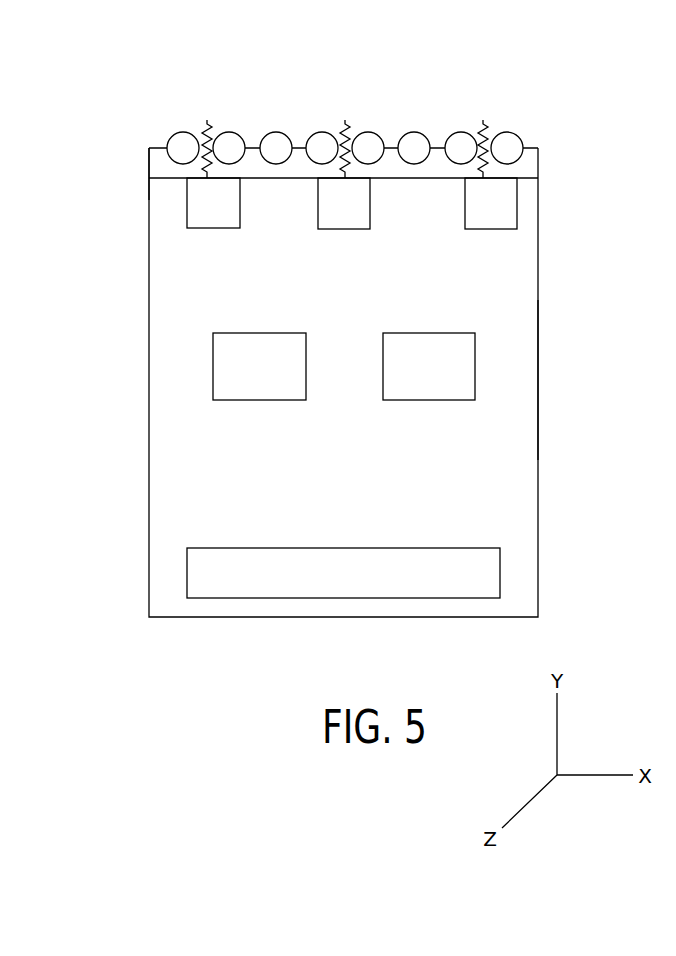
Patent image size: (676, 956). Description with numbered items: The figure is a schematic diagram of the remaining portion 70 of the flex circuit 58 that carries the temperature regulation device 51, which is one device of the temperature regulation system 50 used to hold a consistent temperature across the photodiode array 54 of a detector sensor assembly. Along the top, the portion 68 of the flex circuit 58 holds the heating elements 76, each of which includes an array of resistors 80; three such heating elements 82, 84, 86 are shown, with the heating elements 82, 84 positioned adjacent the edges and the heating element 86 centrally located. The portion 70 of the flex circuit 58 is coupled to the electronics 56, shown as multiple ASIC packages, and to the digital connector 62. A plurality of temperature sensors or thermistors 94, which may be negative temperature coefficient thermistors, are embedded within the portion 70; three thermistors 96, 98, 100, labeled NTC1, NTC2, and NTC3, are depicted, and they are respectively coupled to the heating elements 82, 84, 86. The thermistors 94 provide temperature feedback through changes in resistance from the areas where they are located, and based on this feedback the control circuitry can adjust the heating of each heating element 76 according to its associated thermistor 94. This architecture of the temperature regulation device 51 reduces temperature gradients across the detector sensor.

The temperature regulation system 50 is at (553, 141).
The temperature regulation device 51 is at (541, 124).
The photodiode array 54 is at (165, 134).
The electronics 56 is at (259, 401).
The flex circuit 58 is at (519, 371).
The digital connector 62 is at (420, 618).
The portion of the flex circuit 68 is at (540, 162).
The remaining portion of the flex circuit 70 is at (540, 235).
The heating elements 76 is at (371, 119).
The resistors 80 is at (200, 131).
The heating element 82 is at (211, 128).
The heating element 84 is at (349, 128).
The heating element 86 is at (487, 128).
The thermistors 94 is at (213, 222).
The thermistor NTC1 96 is at (478, 230).
The thermistor NTC2 98 is at (330, 230).
The thermistor NTC3 100 is at (201, 229).